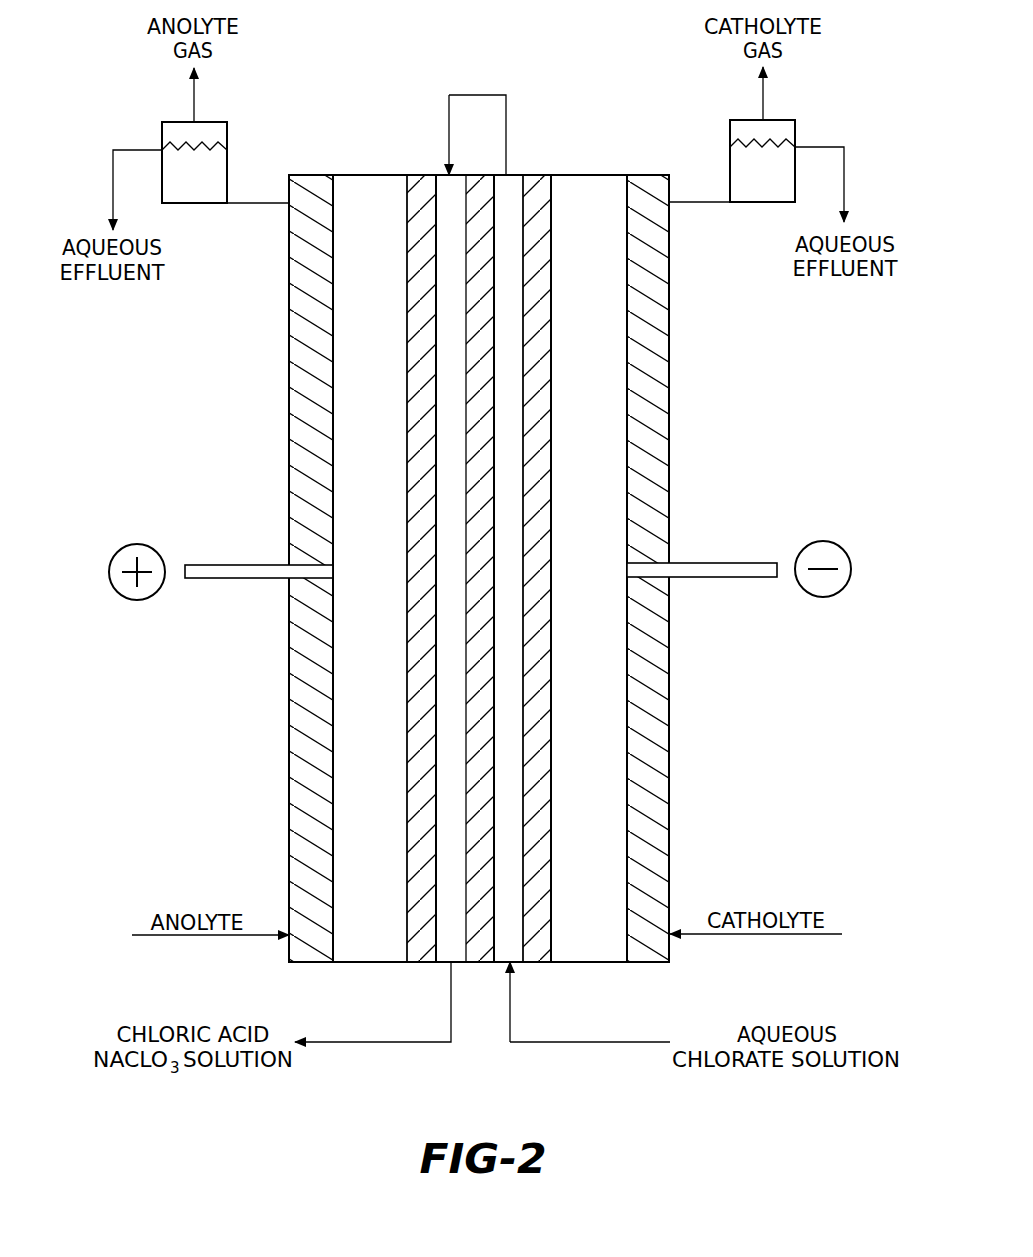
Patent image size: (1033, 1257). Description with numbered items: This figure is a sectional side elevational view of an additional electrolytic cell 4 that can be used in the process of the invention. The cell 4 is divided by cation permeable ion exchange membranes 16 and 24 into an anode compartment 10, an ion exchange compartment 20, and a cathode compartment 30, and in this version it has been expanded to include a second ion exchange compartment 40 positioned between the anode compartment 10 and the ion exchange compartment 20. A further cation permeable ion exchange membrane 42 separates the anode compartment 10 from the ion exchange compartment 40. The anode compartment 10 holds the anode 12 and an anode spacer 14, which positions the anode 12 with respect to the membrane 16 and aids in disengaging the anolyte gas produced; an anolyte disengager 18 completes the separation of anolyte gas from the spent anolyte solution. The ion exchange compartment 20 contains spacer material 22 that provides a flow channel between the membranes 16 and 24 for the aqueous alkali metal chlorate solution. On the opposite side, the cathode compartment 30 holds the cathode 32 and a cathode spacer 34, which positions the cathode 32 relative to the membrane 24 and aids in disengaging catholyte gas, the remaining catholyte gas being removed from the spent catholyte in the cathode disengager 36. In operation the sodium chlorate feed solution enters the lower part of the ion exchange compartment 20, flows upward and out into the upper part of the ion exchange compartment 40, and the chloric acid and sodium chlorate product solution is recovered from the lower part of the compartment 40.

The electrolytic cell 4 is at (280, 805).
The anode compartment 10 is at (358, 172).
The anode 12 is at (370, 940).
The anode spacer 14 is at (302, 473).
The cation permeable ion exchange membrane 16 is at (420, 190).
The anolyte disengager 18 is at (197, 190).
The ion exchange compartment 20 is at (513, 635).
The spacer material 22 is at (505, 192).
The cation permeable ion exchange membrane 24 is at (540, 943).
The cathode compartment 30 is at (602, 967).
The cathode 32 is at (583, 192).
The cathode spacer 34 is at (653, 710).
The cathode disengager 36 is at (766, 188).
The second ion exchange compartment 40 is at (450, 563).
The cation permeable ion exchange membrane 42 is at (482, 962).